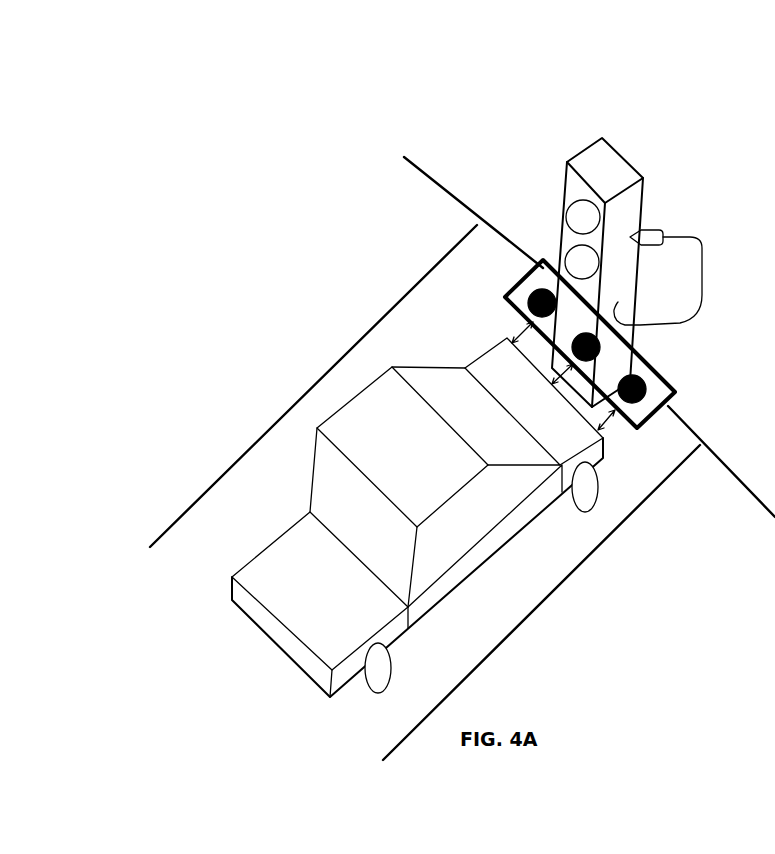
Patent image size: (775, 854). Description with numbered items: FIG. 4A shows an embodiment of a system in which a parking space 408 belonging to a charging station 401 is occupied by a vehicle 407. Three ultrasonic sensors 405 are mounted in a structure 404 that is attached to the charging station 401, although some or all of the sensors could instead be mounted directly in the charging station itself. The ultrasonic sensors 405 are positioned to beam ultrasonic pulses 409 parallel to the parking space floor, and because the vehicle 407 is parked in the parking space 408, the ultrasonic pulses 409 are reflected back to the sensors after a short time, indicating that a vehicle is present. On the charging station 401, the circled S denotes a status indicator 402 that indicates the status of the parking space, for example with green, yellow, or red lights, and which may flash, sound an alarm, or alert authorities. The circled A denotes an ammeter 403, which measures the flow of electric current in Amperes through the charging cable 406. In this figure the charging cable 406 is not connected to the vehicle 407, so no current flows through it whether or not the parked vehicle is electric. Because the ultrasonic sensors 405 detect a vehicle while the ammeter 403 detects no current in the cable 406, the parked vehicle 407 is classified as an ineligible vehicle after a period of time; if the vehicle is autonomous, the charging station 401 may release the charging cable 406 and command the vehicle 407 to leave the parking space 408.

The charging station 401 is at (597, 163).
The status indicator 402 is at (570, 215).
The ammeter 403 is at (567, 260).
The structure 404 is at (510, 292).
The ultrasonic sensors 405 is at (522, 310).
The charging cable 406 is at (700, 302).
The vehicle 407 is at (387, 416).
The parking space 408 is at (160, 615).
The ultrasonic pulses 409 is at (610, 415).